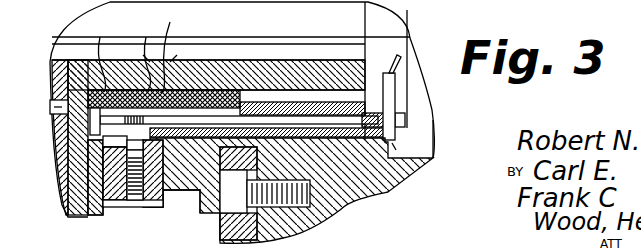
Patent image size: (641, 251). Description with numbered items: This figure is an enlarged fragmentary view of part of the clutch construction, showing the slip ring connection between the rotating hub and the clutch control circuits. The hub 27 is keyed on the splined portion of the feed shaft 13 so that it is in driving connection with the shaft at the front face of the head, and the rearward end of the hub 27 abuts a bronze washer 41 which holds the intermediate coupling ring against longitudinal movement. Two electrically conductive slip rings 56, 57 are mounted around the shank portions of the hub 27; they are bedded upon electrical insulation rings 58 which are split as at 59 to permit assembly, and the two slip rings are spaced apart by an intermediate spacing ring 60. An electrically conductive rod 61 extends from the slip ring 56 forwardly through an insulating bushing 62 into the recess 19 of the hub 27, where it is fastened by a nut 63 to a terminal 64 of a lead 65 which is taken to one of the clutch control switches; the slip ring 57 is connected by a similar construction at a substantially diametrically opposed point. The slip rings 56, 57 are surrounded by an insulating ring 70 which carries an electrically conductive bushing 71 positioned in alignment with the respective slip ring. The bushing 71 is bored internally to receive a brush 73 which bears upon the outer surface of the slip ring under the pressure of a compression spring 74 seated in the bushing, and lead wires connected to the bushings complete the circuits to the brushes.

The feed shaft 13 is at (242, 80).
The recess 19 is at (433, 150).
The hub 27 is at (385, 185).
The bronze washer 41 is at (80, 128).
The slip ring 56 is at (135, 52).
The slip ring 57 is at (183, 52).
The electrical insulation ring 58 is at (206, 92).
The split 59 is at (140, 55).
The intermediate spacing ring 60 is at (172, 47).
The electrically conductive rod 61 is at (346, 130).
The insulating bushing 62 is at (376, 105).
The nut 63 is at (404, 151).
The terminal 64 is at (396, 82).
The lead 65 is at (400, 63).
The insulating ring 70 is at (200, 191).
The electrically conductive bushing 71 is at (112, 210).
The brush 73 is at (100, 162).
The compression spring 74 is at (141, 205).